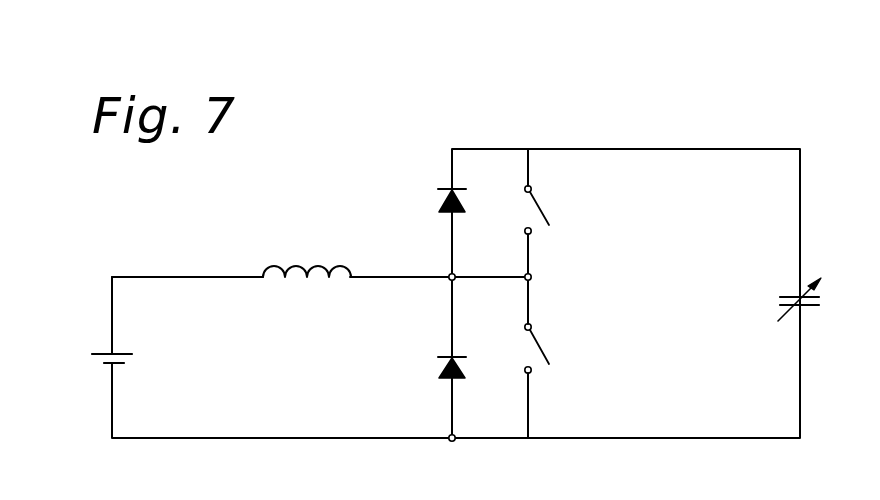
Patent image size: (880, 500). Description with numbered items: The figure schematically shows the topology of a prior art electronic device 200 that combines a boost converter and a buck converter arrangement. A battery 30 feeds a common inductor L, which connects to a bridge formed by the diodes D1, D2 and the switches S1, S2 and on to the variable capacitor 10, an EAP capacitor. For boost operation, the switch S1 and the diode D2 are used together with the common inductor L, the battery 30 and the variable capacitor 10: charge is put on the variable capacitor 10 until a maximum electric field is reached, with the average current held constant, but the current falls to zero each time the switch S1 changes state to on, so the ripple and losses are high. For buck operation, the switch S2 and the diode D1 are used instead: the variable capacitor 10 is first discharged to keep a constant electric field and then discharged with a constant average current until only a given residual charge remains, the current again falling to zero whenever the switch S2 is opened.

The prior art electronic device 200 is at (610, 127).
The battery / DC source 30 is at (107, 358).
The common inductor L is at (307, 260).
The diode D1 is at (436, 362).
The diode D2 is at (436, 199).
The switch S1 is at (547, 348).
The switch S2 is at (547, 210).
The variable capacitor 10 is at (811, 305).